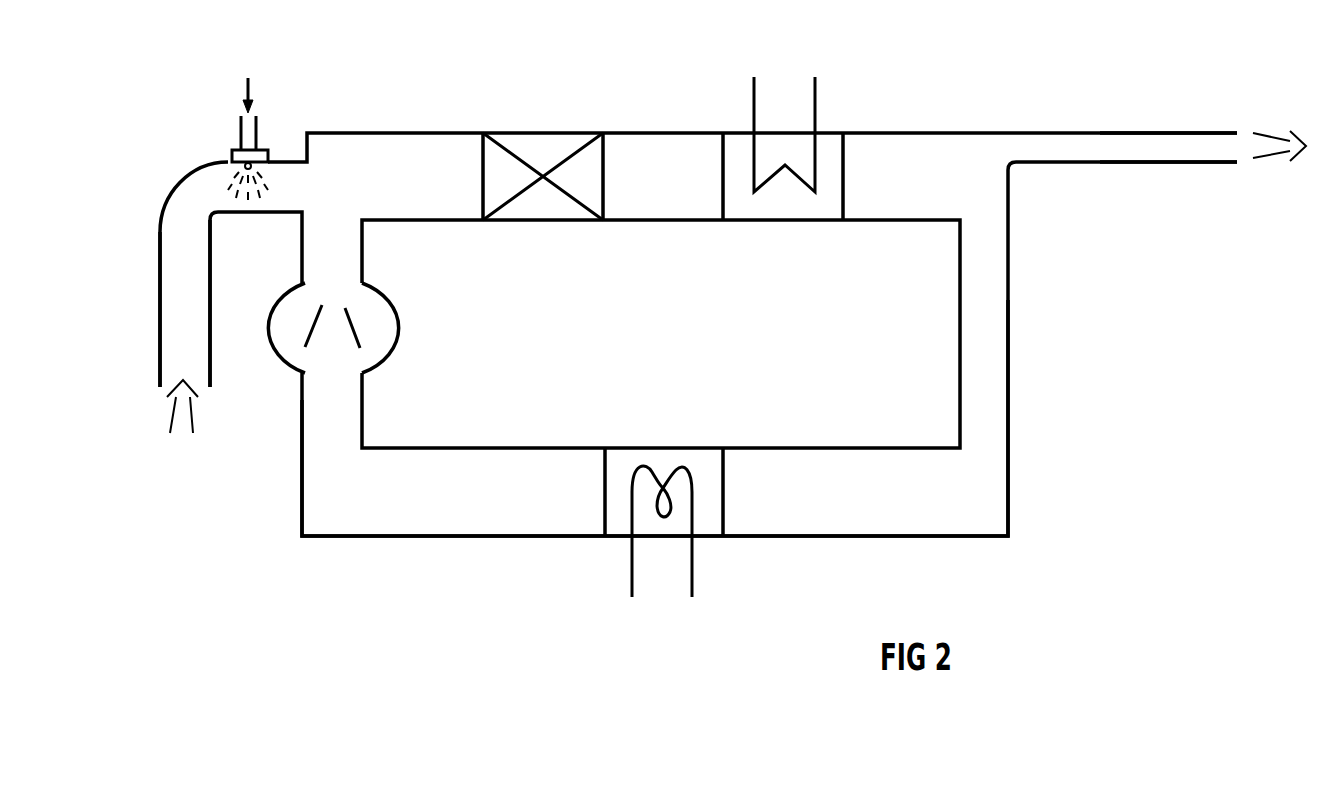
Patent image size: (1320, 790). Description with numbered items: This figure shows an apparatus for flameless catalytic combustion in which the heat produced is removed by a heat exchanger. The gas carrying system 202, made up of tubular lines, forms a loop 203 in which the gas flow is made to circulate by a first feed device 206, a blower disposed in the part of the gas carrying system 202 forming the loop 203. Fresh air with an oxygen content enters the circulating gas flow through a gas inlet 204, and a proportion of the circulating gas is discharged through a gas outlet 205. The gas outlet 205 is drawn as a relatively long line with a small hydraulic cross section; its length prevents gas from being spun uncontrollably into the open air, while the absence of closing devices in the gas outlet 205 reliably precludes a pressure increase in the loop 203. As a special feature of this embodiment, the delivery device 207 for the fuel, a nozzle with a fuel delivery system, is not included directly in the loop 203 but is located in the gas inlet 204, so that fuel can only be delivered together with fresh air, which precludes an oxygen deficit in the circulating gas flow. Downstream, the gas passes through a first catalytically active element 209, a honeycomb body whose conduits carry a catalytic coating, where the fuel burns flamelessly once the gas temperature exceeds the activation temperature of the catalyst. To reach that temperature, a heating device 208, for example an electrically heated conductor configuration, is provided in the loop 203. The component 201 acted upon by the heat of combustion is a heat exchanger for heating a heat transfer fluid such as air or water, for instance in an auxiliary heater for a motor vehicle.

The component 201 is at (817, 157).
The gas carrying system 202 is at (402, 132).
The loop 203 is at (1006, 420).
The gas inlet 204 is at (180, 291).
The gas outlet 205 is at (1176, 148).
The first feed device 206 is at (375, 328).
The delivery device 207 is at (228, 153).
The heating device 208 is at (697, 500).
The first catalytically active element 209 is at (553, 155).